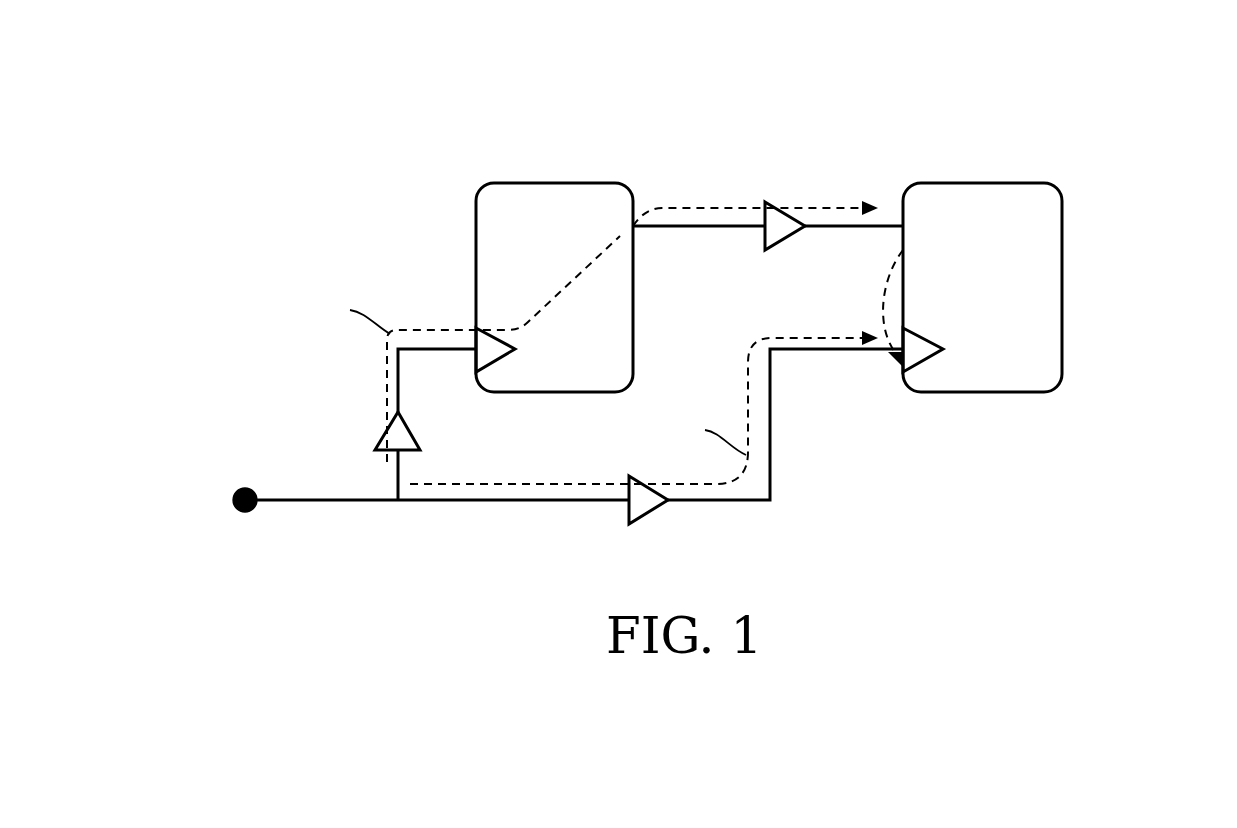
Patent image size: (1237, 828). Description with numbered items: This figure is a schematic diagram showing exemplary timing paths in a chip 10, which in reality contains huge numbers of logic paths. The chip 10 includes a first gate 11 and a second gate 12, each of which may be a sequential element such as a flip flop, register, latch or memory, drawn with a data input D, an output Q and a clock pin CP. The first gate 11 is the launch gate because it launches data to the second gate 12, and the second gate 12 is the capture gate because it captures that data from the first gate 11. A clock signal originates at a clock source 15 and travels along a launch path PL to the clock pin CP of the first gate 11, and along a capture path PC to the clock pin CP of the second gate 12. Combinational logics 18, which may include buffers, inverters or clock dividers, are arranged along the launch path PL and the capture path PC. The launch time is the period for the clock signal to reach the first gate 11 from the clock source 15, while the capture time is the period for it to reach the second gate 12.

The chip 10 is at (1150, 124).
The first gate 11 is at (555, 183).
The second gate 12 is at (983, 183).
The clock source 15 is at (236, 493).
The combinational logics 18 is at (787, 210).